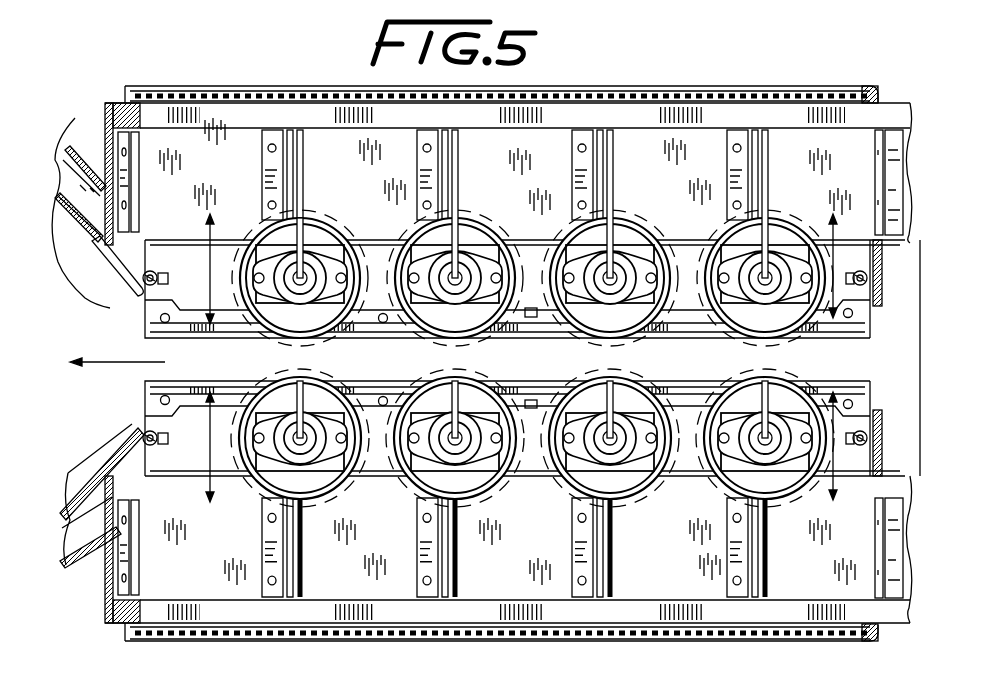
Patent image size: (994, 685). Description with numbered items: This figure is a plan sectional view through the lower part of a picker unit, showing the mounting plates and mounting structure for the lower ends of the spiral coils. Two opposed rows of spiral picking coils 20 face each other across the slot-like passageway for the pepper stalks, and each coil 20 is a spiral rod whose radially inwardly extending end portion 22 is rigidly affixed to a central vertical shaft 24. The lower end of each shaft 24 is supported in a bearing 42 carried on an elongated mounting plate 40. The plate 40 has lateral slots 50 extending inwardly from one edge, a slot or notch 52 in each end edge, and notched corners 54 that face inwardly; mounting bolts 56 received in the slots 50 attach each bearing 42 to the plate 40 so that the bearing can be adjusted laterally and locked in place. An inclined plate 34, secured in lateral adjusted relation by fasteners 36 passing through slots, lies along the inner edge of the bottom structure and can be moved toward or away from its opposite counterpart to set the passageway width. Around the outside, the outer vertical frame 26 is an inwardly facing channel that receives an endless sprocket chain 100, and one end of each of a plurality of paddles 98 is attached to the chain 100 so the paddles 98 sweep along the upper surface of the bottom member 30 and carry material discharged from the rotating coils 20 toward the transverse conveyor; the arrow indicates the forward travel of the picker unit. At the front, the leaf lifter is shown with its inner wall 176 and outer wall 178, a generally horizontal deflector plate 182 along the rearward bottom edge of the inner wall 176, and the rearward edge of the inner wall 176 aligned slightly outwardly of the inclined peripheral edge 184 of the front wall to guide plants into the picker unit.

The spiral picking coil 20 is at (325, 336).
The radially inwardly extending end portion 22 is at (303, 222).
The central vertical shaft 24 is at (318, 252).
The outer vertical frame 26 is at (815, 608).
The bottom member 30 is at (222, 569).
The inclined plate 34 is at (526, 390).
The fasteners 36 is at (368, 470).
The mounting plate 40 is at (244, 240).
The bearing 42 is at (665, 382).
The lateral slots 50 is at (562, 470).
The slot or notch 52 is at (170, 292).
The notched corners 54 is at (170, 324).
The mounting bolts 56 is at (676, 476).
The paddles 98 is at (292, 567).
The endless sprocket chain 100 is at (141, 606).
The inner wall 176 is at (65, 150).
The outer wall 178 is at (106, 103).
The deflector plate 182 is at (93, 284).
The inclined peripheral edge 184 is at (136, 298).